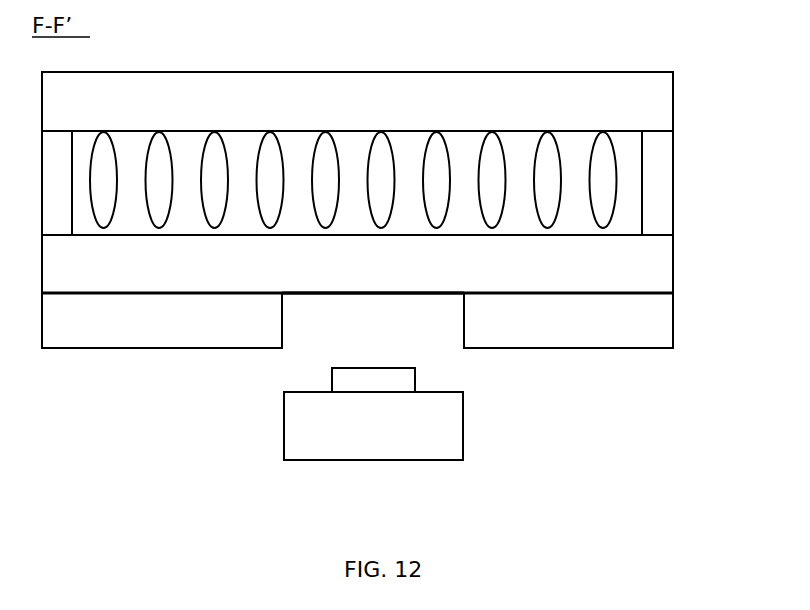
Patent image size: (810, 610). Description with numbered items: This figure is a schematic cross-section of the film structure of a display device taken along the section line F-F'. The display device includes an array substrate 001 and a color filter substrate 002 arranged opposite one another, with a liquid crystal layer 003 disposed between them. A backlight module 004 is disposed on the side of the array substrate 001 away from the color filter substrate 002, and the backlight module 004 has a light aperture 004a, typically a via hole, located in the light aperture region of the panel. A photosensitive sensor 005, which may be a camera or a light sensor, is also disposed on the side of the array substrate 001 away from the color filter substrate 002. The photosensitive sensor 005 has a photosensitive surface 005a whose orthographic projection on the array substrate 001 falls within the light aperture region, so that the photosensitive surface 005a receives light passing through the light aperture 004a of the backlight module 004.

The array substrate 001 is at (638, 268).
The color filter substrate 002 is at (635, 108).
The liquid crystal layer 003 is at (600, 176).
The backlight module 004 is at (657, 324).
The light aperture 004a is at (422, 338).
The photosensitive sensor 005 is at (445, 415).
The photosensitive surface 005a is at (408, 438).